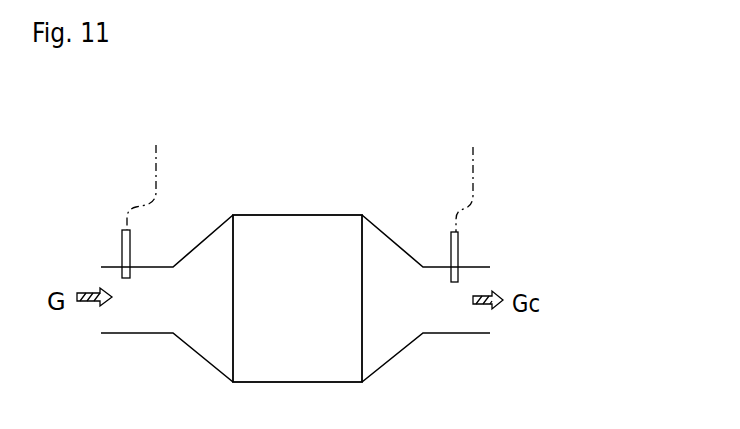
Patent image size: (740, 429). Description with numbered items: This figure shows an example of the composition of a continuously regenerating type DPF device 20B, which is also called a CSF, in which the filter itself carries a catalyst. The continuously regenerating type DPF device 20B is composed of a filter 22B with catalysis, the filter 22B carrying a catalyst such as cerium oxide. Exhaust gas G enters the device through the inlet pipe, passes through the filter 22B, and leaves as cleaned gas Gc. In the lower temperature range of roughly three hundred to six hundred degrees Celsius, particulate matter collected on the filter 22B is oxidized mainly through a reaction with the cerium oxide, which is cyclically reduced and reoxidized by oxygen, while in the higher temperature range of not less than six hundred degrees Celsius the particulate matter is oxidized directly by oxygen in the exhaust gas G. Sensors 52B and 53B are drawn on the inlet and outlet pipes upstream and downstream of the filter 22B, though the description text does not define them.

The continuously regenerating type DPF device 20B is at (332, 236).
The filter with catalysis 22B is at (344, 221).
The upstream sensor 52B is at (120, 238).
The downstream sensor 53B is at (459, 250).